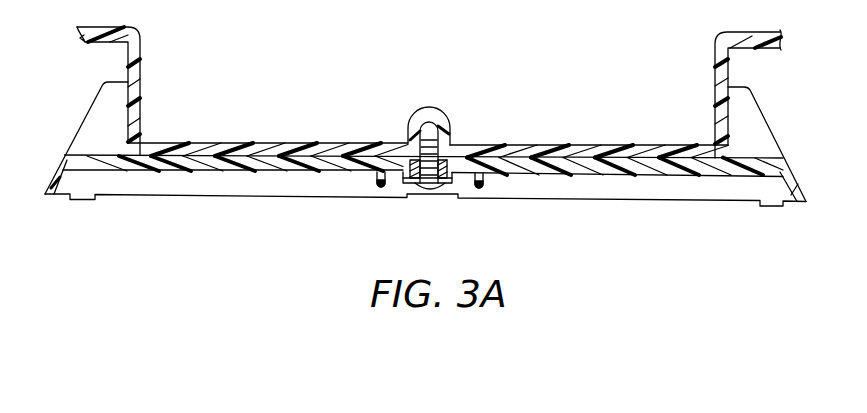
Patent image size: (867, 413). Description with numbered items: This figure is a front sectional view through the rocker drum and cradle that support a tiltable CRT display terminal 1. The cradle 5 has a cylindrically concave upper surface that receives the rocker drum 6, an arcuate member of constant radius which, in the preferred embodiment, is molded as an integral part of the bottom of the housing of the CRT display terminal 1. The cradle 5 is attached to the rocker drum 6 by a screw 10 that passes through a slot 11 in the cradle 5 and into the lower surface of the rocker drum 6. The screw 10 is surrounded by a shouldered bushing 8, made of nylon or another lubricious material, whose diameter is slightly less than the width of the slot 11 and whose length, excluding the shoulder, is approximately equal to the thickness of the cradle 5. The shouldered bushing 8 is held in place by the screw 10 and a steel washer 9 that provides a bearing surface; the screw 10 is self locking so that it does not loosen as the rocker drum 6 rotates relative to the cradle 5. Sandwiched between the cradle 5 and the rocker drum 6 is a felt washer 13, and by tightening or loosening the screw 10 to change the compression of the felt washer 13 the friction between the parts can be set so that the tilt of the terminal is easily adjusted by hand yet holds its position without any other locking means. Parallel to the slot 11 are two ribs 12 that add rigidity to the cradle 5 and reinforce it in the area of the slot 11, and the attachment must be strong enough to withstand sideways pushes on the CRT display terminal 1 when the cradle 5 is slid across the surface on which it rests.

The CRT display terminal 1 is at (92, 44).
The cradle 5 is at (797, 175).
The rocker drum 6 is at (729, 69).
The shouldered bushing 8 is at (450, 178).
The steel washer 9 is at (446, 183).
The screw 10 is at (430, 192).
The slot 11 is at (408, 168).
The ribs 12 is at (373, 178).
The felt washer 13 is at (478, 145).